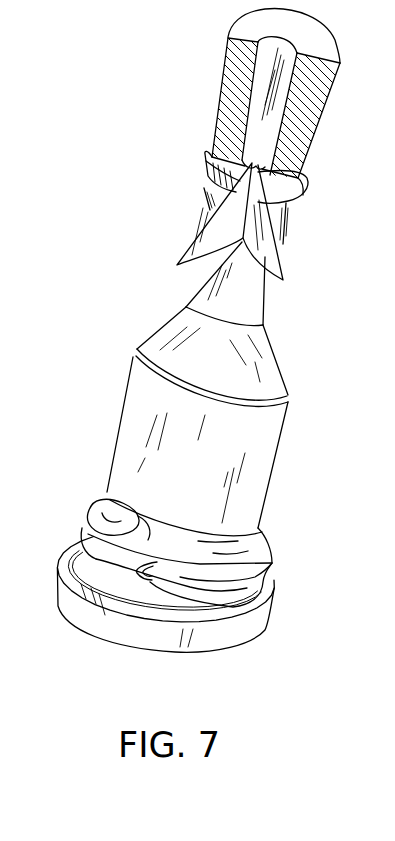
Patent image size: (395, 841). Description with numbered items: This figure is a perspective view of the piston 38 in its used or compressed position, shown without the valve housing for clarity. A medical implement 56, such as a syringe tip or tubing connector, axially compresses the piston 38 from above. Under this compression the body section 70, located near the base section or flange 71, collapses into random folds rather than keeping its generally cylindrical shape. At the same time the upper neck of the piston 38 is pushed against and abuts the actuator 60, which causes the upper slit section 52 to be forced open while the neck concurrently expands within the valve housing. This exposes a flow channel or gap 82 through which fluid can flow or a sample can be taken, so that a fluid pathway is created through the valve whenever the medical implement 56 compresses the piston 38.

The medical implement 56 is at (220, 85).
The upper slit section 52 is at (263, 232).
The flow channel or gap 82 is at (233, 220).
The actuator 60 is at (258, 302).
The piston 38 is at (118, 413).
The body section 70 is at (97, 502).
The base section or flange 71 is at (265, 590).